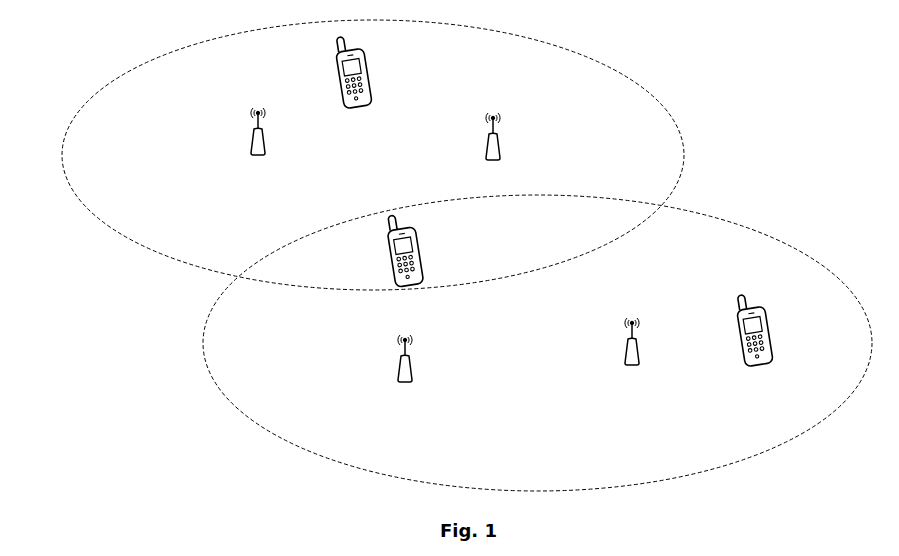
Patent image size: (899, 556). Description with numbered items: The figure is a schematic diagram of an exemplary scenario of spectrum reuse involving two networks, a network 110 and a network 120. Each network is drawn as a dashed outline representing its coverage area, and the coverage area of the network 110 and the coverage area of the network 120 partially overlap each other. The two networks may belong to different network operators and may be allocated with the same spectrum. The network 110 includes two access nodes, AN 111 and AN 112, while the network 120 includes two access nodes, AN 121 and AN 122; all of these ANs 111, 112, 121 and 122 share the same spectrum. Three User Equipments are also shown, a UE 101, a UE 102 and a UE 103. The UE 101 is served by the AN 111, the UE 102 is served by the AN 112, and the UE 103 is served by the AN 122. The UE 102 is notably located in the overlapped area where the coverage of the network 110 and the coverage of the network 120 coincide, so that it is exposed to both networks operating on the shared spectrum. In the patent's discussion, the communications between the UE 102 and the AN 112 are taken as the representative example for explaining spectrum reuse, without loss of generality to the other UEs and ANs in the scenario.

The network 110 is at (373, 155).
The network 120 is at (537, 343).
The User Equipment 101 is at (353, 88).
The User Equipment 102 is at (406, 264).
The User Equipment 103 is at (749, 342).
The AN 111 is at (258, 148).
The AN 112 is at (498, 152).
The AN 121 is at (406, 375).
The AN 122 is at (633, 360).